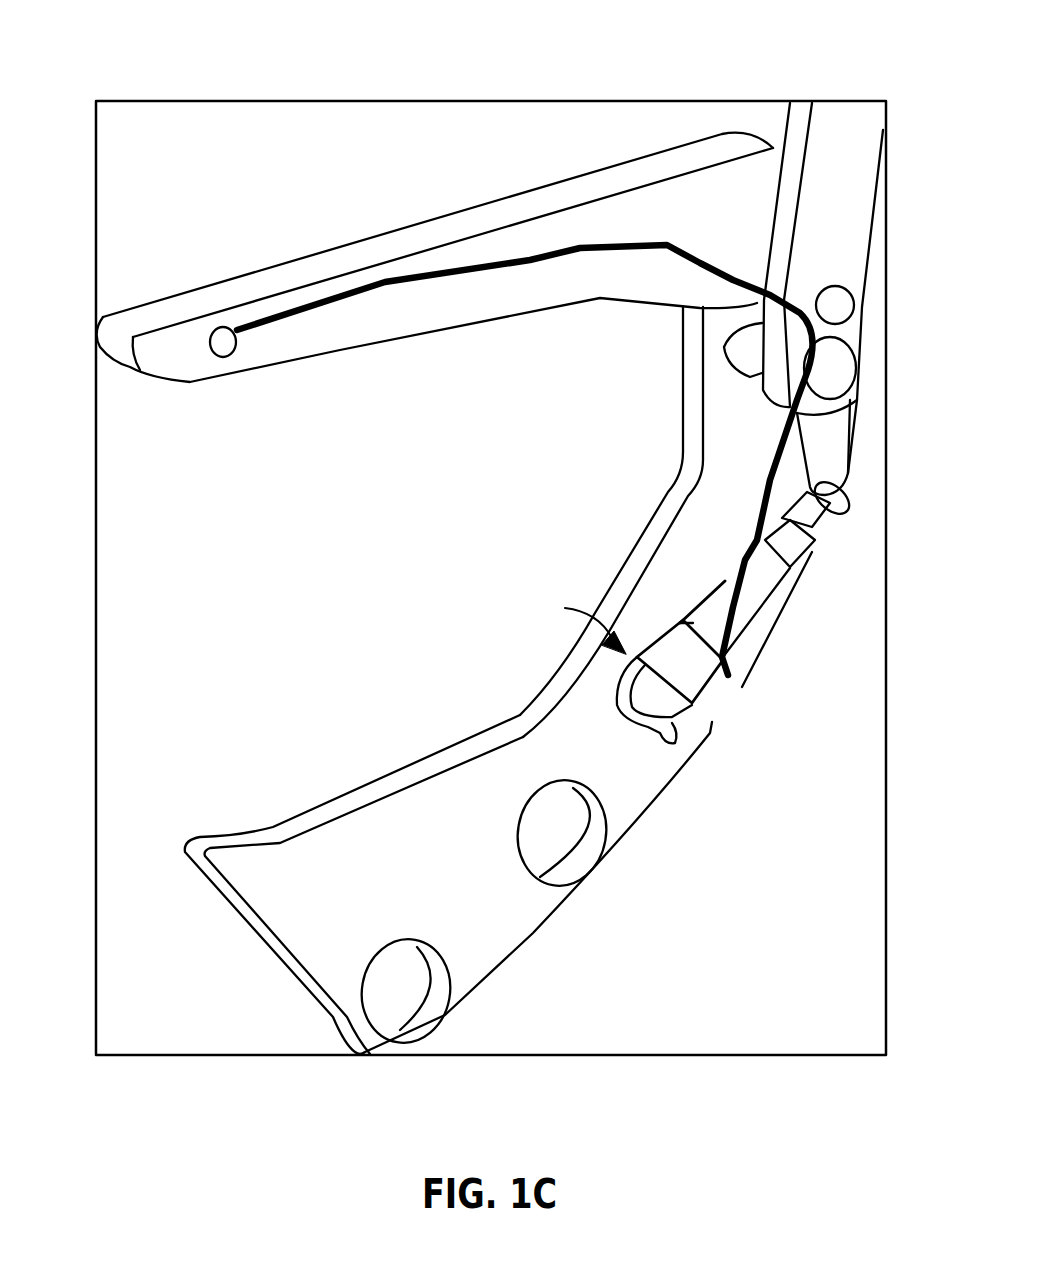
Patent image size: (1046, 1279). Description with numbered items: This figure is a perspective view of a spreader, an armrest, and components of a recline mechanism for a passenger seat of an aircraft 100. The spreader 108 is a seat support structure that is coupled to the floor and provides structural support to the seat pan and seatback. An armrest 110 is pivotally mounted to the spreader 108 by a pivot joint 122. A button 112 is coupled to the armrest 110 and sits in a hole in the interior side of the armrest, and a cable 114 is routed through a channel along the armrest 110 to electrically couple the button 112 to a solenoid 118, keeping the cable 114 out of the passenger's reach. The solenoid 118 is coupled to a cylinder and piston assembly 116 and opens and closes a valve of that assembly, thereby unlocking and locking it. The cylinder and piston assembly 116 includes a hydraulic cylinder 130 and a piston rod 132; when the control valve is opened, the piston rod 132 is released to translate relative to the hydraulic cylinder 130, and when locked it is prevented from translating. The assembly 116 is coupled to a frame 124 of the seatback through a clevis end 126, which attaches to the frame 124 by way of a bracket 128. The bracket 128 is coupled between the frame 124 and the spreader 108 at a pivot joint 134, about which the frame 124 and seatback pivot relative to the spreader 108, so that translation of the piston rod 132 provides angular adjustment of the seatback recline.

The aircraft 100 is at (100, 39).
The spreader 108 is at (533, 935).
The armrest 110 is at (183, 295).
The button 112 is at (225, 357).
The cable 114 is at (427, 280).
The cylinder and piston assembly 116 is at (565, 622).
The solenoid 118 is at (697, 737).
The pivot joint 122 is at (733, 147).
The frame 124 is at (853, 212).
The clevis end 126 is at (827, 508).
The bracket 128 is at (830, 440).
The hydraulic cylinder 130 is at (707, 608).
The piston rod 132 is at (792, 542).
The pivot joint 134 is at (838, 362).